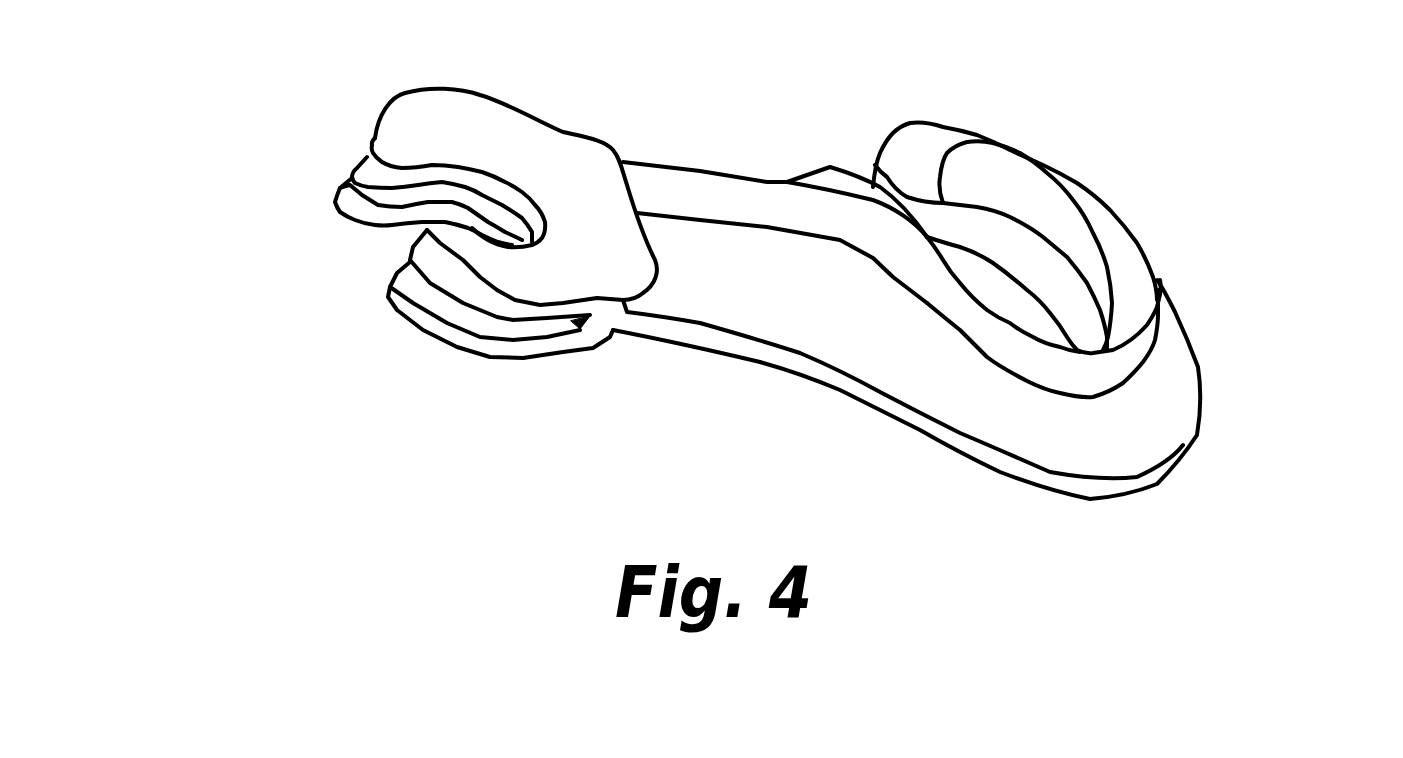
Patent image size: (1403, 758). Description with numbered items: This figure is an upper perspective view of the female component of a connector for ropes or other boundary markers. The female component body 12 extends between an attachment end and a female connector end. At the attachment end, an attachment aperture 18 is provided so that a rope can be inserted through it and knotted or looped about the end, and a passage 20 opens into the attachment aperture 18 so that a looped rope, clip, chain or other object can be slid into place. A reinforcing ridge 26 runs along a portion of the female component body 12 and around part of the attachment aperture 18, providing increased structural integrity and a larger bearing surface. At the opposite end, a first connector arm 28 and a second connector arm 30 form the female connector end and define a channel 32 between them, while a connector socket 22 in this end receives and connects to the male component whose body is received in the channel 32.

The female component body 12 is at (1082, 457).
The attachment aperture 18 is at (1055, 302).
The passage 20 is at (862, 158).
The connector socket 22 is at (465, 223).
The reinforcing ridge 26 is at (1130, 365).
The first connector arm 28 is at (367, 157).
The second connector arm 30 is at (327, 196).
The channel 32 is at (397, 313).